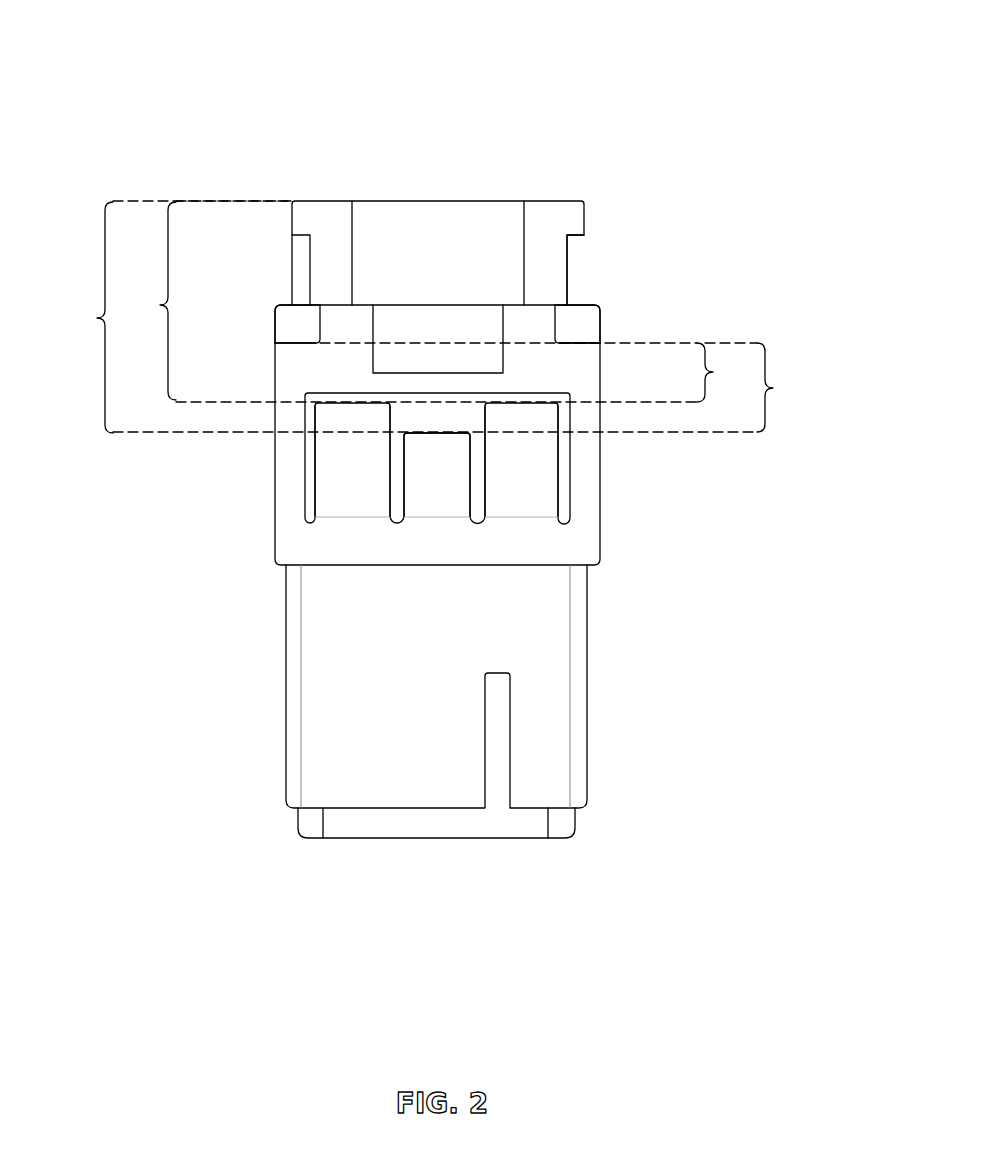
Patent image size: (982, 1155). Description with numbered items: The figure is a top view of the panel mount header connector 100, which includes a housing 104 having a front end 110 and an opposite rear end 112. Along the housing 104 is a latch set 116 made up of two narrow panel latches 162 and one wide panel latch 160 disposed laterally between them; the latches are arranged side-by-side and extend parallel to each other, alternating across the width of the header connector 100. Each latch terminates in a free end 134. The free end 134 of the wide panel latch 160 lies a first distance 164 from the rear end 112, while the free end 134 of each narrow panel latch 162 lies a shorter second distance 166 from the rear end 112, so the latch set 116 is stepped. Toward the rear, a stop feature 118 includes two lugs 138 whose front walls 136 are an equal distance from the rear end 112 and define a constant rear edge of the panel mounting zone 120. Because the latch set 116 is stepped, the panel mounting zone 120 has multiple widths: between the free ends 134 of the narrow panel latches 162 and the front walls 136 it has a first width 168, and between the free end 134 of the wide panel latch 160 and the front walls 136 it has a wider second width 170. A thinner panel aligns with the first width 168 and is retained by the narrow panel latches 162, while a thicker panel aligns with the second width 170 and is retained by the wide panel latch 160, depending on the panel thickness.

The header connector 100 is at (598, 82).
The housing 104 is at (568, 260).
The front end 110 is at (362, 845).
The rear end 112 is at (389, 196).
The latch set 116 is at (286, 468).
The stop feature 118 is at (275, 320).
The panel mounting zone 120 is at (440, 346).
The free end 134 is at (346, 401).
The front wall 136 is at (300, 343).
The lug 138 is at (292, 327).
The wide panel latch 160 is at (437, 480).
The narrow panel latch 162 is at (355, 487).
The first distance 164 is at (402, 317).
The second distance 166 is at (403, 301).
The first width 168 is at (536, 372).
The second width 170 is at (762, 387).